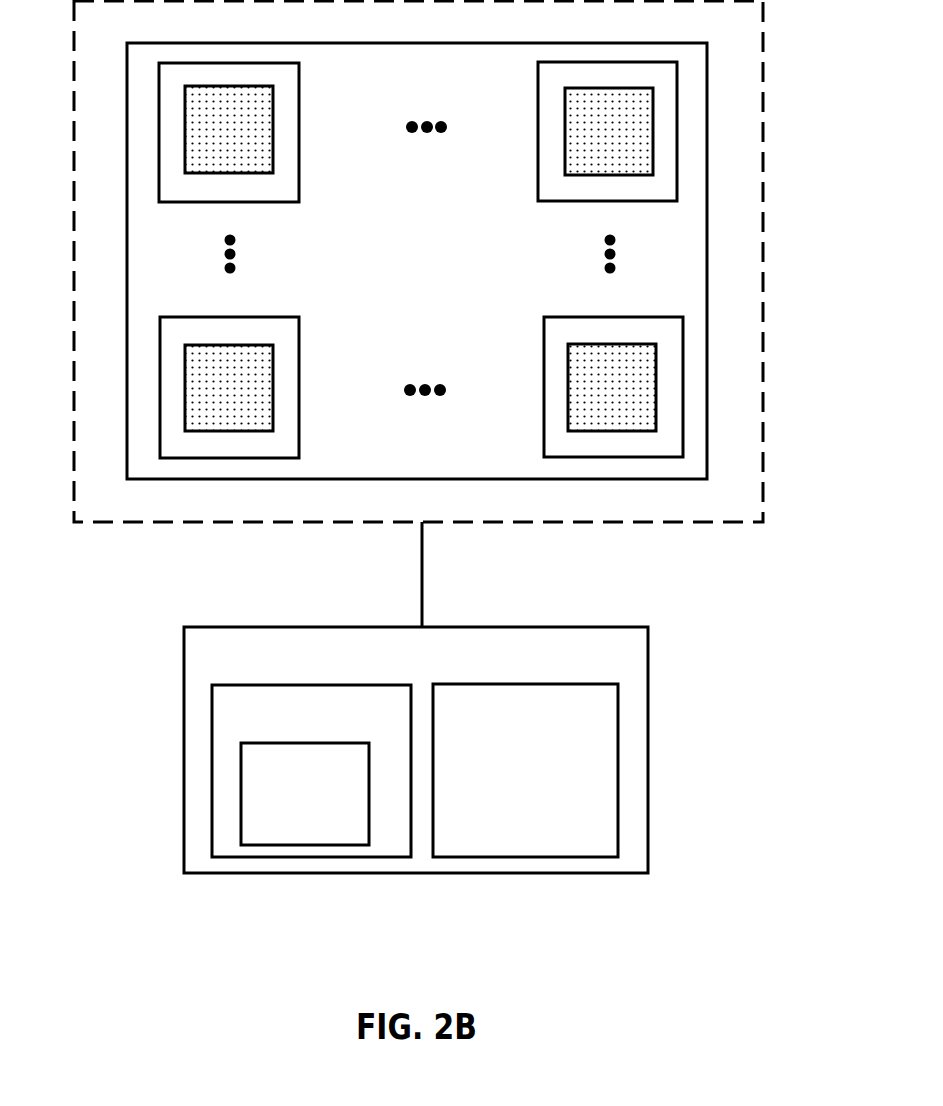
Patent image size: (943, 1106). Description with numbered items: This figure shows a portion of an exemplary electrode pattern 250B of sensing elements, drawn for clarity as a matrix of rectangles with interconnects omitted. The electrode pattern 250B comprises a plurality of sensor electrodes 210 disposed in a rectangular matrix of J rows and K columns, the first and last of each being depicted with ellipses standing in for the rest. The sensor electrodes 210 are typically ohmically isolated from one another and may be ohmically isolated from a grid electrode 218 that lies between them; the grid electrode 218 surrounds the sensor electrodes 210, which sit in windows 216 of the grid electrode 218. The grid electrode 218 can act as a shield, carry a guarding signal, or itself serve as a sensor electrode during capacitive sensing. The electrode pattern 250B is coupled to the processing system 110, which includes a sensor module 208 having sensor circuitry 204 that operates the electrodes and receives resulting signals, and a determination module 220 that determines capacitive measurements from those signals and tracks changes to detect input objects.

The electrode pattern 250B is at (722, 522).
The grid electrode 218 is at (507, 465).
The windows 216 is at (283, 360).
The sensor electrodes 210 is at (617, 398).
The processing system 110 is at (520, 662).
The sensor module 208 is at (397, 719).
The sensor circuitry 204 is at (320, 834).
The determination module 220 is at (577, 796).